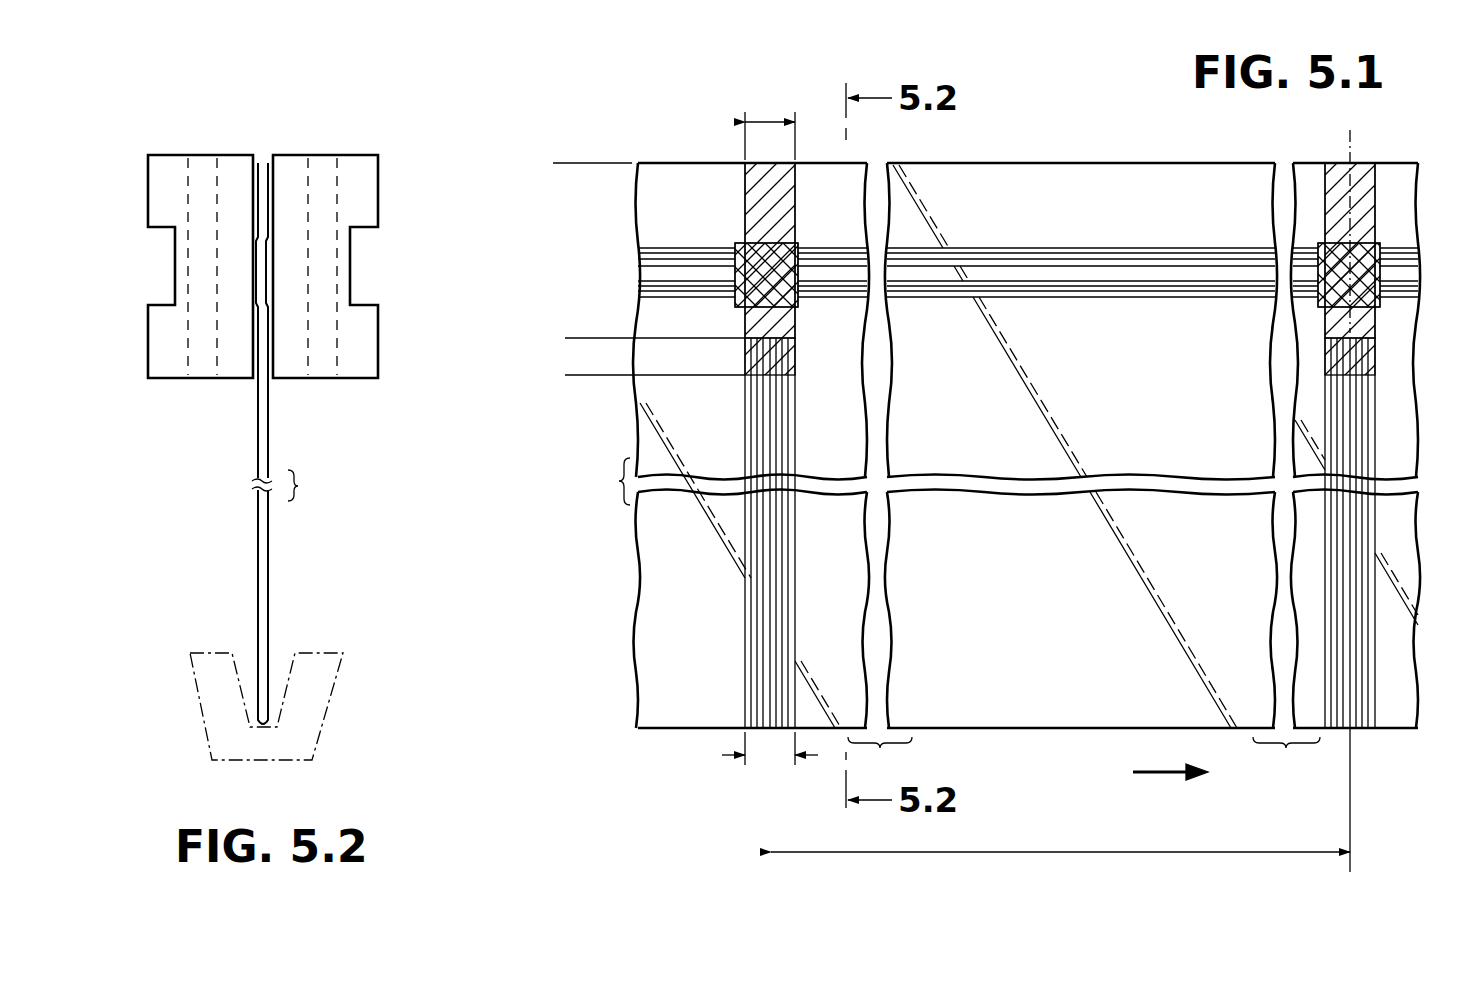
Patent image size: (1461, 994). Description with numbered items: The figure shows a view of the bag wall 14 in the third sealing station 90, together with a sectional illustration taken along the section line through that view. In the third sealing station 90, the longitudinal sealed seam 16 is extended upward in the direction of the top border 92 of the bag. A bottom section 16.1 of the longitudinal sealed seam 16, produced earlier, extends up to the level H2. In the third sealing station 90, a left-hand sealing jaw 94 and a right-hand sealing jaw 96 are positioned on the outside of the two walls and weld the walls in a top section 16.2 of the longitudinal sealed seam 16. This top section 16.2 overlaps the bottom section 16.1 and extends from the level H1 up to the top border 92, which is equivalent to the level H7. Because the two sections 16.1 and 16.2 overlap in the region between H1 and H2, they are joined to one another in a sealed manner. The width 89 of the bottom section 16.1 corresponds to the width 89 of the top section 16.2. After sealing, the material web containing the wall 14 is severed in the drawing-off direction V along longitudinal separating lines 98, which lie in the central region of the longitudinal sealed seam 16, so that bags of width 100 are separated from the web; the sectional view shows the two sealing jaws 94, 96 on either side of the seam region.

In FIG. 5.1, the wall 14 is at (1072, 620).
In FIG. 5.1, the longitudinal sealed seam 16 is at (753, 429).
In FIG. 5.1, the bottom section of the longitudinal sealed seam 16.1 is at (762, 703).
In FIG. 5.1, the top section of the longitudinal sealed seam 16.2 is at (752, 205).
In FIG. 5.1, the width 89 is at (765, 118).
In FIG. 5.1, the third sealing station 90 is at (1077, 141).
In FIG. 5.1, the top border 92 is at (1005, 162).
In FIG. 5.2, the left-hand sealing jaw 94 is at (167, 380).
In FIG. 5.2, the right-hand sealing jaw 96 is at (355, 378).
In FIG. 5.1, the longitudinal separating line 98 is at (1343, 152).
In FIG. 5.1, the width 100 is at (1055, 848).
In FIG. 5.1, the top border level H7 is at (592, 149).
In FIG. 5.1, the top value of bottom section H2 is at (655, 324).
In FIG. 5.1, the bottom value of top section H1 is at (655, 361).
In FIG. 5.1, the drawing-off direction V is at (1165, 774).